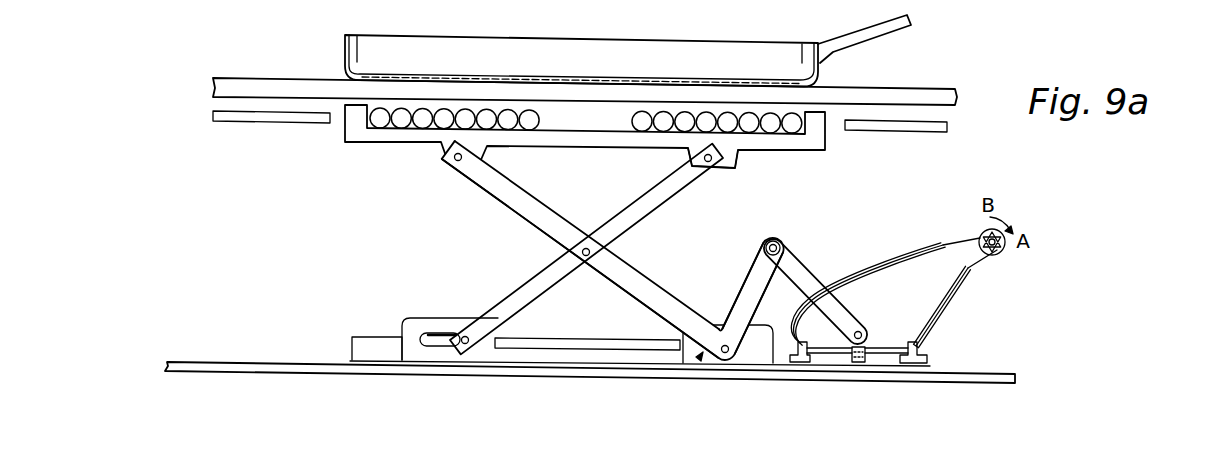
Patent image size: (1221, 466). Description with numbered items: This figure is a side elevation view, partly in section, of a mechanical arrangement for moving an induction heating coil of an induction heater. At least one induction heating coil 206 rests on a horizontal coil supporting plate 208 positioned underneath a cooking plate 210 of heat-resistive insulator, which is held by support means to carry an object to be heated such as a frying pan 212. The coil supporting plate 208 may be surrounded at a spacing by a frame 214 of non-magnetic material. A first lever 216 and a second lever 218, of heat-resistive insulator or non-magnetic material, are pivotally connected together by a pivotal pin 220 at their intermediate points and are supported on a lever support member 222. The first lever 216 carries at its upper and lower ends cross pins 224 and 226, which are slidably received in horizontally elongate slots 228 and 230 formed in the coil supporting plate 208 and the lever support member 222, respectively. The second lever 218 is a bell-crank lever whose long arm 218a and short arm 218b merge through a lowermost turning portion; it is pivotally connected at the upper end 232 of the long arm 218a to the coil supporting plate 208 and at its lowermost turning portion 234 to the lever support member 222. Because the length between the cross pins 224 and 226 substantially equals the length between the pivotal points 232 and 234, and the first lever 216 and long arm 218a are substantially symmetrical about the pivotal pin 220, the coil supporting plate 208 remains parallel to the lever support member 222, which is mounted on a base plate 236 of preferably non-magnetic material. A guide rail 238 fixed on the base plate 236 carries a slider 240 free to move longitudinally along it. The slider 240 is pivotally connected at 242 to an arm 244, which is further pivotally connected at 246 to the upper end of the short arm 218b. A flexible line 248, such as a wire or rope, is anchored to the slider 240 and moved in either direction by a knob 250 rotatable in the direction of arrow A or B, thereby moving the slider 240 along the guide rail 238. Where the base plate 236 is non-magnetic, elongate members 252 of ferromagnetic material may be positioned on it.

The induction heating coil 206 is at (540, 122).
The coil supporting plate 208 is at (393, 143).
The cooking plate 210 is at (277, 78).
The frying pan 212 is at (528, 36).
The frame 214 is at (280, 123).
The first lever 216 is at (670, 207).
The second lever 218 is at (698, 360).
The long arm 218a is at (513, 211).
The short arm 218b is at (745, 290).
The pivotal pin 220 is at (587, 247).
The lever support member 222 is at (594, 345).
The cross pin 224 is at (714, 168).
The cross pin 226 is at (469, 333).
The elongate slot 228 is at (738, 160).
The elongate slot 230 is at (437, 334).
The upper end of long arm 232 is at (453, 164).
The lowermost turning portion 234 is at (724, 360).
The base plate 236 is at (500, 375).
The guide rail 238 is at (900, 367).
The slider 240 is at (857, 363).
The pivotal connection 242 is at (862, 329).
The arm 244 is at (818, 276).
The pivotal connection 246 is at (783, 242).
The flexible line 248 is at (950, 321).
The knob 250 is at (998, 256).
The elongate member 252 is at (374, 337).